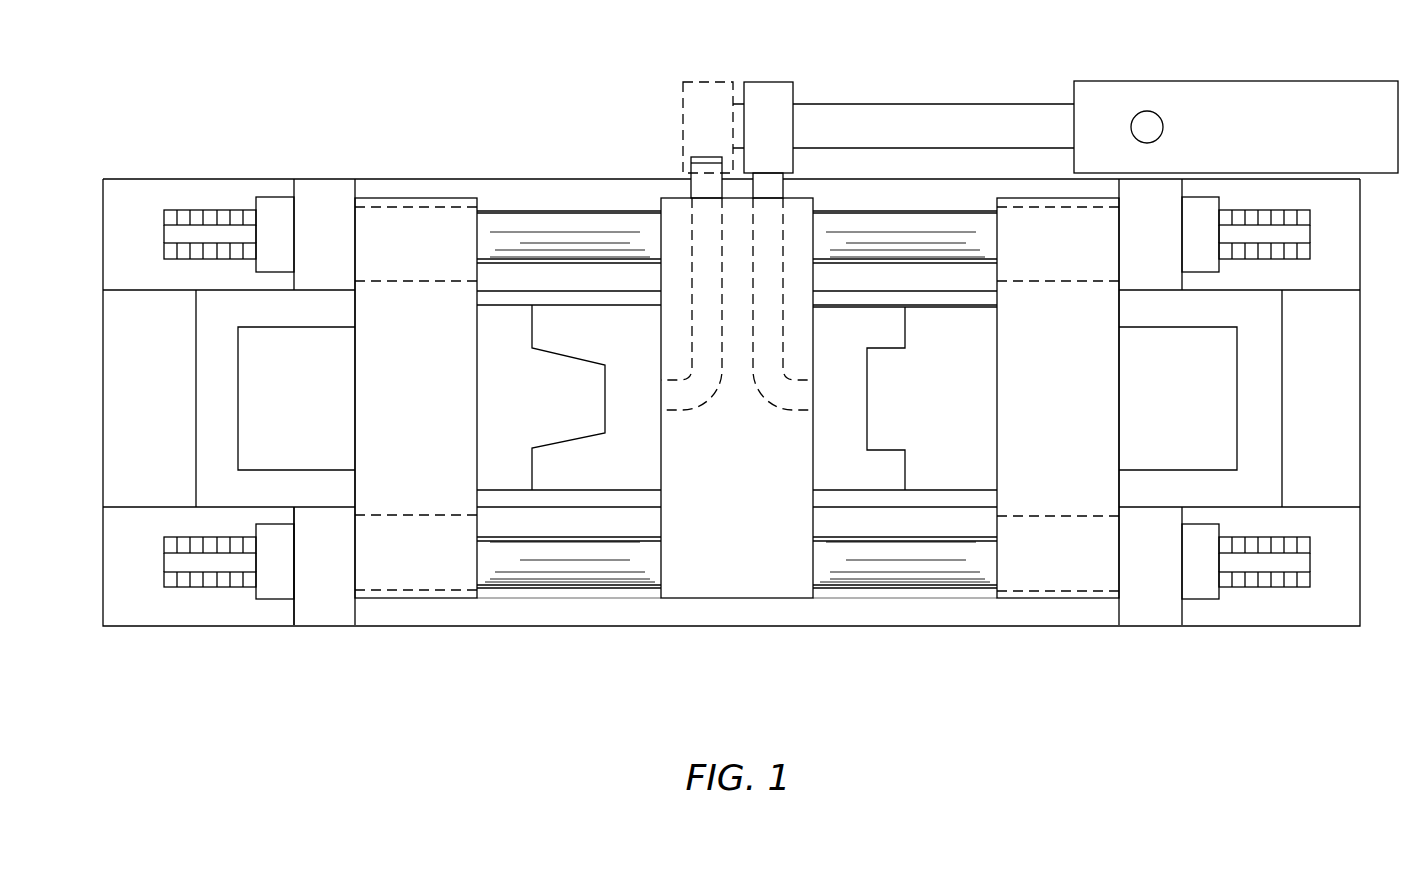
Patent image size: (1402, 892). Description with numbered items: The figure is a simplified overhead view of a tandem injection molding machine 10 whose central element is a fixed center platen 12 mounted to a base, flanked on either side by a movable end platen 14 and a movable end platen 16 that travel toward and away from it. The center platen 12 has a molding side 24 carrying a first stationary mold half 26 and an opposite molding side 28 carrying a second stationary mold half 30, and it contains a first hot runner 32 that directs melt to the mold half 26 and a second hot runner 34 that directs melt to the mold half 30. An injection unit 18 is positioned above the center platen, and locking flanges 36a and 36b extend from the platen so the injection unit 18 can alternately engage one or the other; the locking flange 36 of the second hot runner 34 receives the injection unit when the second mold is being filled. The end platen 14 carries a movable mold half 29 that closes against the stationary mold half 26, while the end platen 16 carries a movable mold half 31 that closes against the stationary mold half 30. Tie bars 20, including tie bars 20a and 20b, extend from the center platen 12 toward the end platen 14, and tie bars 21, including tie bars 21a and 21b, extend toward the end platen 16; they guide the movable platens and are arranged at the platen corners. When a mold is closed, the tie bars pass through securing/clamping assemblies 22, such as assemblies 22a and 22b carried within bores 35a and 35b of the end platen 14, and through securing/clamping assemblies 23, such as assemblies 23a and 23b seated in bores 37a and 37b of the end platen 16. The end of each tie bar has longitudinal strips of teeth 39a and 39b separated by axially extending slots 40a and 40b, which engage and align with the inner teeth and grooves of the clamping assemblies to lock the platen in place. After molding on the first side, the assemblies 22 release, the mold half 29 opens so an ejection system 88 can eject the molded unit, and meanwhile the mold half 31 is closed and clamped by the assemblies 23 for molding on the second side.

The tandem injection molding machine 10 is at (510, 78).
The fixed center platen 12 is at (735, 371).
The movable end platen 14 is at (416, 411).
The movable end platen 16 is at (1064, 437).
The injection unit 18 is at (945, 112).
The tie bars 20 is at (326, 403).
The tie bar 20a is at (229, 229).
The tie bar 20b is at (229, 573).
The tie bars 21 is at (904, 376).
The tie bar 21a is at (958, 590).
The tie bar 21b is at (959, 220).
The securing/clamping assemblies 22 is at (324, 385).
The securing/clamping assembly 22a is at (325, 197).
The securing/clamping assembly 22b is at (316, 600).
The securing/clamping assemblies 23 is at (1239, 429).
The securing/clamping assembly 23a is at (1163, 605).
The securing/clamping assembly 23b is at (1158, 190).
The molding side 24 is at (658, 596).
The first stationary mold half 26 is at (566, 399).
The molding side 28 is at (812, 596).
The movable mold half 29 is at (488, 365).
The second stationary mold half 30 is at (830, 470).
The movable mold half 31 is at (985, 448).
The first hot runner 32 is at (700, 247).
The second hot runner 34 is at (772, 258).
The bore 35a is at (425, 210).
The bore 35b is at (454, 592).
The locking flange 36 is at (721, 120).
The locking flange 36a is at (703, 157).
The locking flange 36b is at (778, 188).
The bore 37a is at (1061, 594).
The bore 37b is at (1071, 283).
The strip of teeth 39a is at (182, 260).
The strip of teeth 39b is at (182, 580).
The slot 40a is at (220, 232).
The slot 40b is at (197, 557).
The ejection system 88 is at (325, 428).